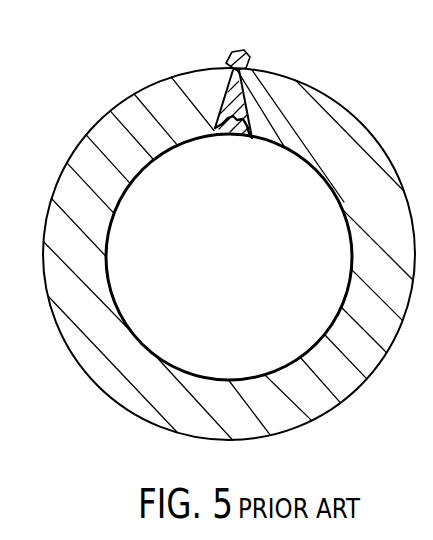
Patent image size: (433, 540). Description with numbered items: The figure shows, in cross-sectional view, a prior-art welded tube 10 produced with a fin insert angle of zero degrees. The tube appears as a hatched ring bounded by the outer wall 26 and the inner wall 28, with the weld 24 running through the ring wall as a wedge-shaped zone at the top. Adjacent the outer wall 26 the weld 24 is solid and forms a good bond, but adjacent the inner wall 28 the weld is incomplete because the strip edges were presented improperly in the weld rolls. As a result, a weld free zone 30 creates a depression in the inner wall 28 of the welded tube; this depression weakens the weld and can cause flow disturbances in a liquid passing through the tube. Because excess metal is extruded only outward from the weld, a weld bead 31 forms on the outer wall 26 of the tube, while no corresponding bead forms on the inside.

The tube 10 is at (368, 143).
The weld 24 is at (262, 85).
The outer wall 26 is at (182, 73).
The inner wall 28 is at (111, 229).
The weld free zone 30 is at (231, 133).
The weld bead 31 is at (249, 53).